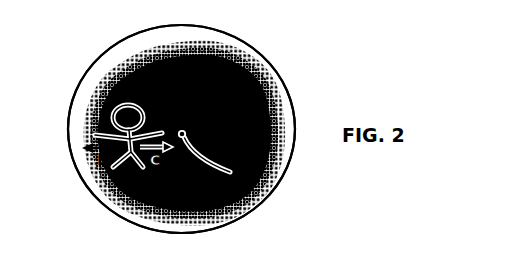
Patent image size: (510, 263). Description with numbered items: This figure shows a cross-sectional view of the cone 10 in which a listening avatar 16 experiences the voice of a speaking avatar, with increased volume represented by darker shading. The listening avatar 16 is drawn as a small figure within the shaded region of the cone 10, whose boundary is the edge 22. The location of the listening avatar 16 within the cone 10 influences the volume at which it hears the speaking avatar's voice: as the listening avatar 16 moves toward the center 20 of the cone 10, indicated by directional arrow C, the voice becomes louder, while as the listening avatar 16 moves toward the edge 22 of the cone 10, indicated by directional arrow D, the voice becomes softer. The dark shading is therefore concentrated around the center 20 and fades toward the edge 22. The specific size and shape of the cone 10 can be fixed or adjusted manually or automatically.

The cone 10 is at (120, 42).
The edge 22 is at (281, 79).
The listening avatar 16 is at (137, 93).
The center 20 is at (216, 157).